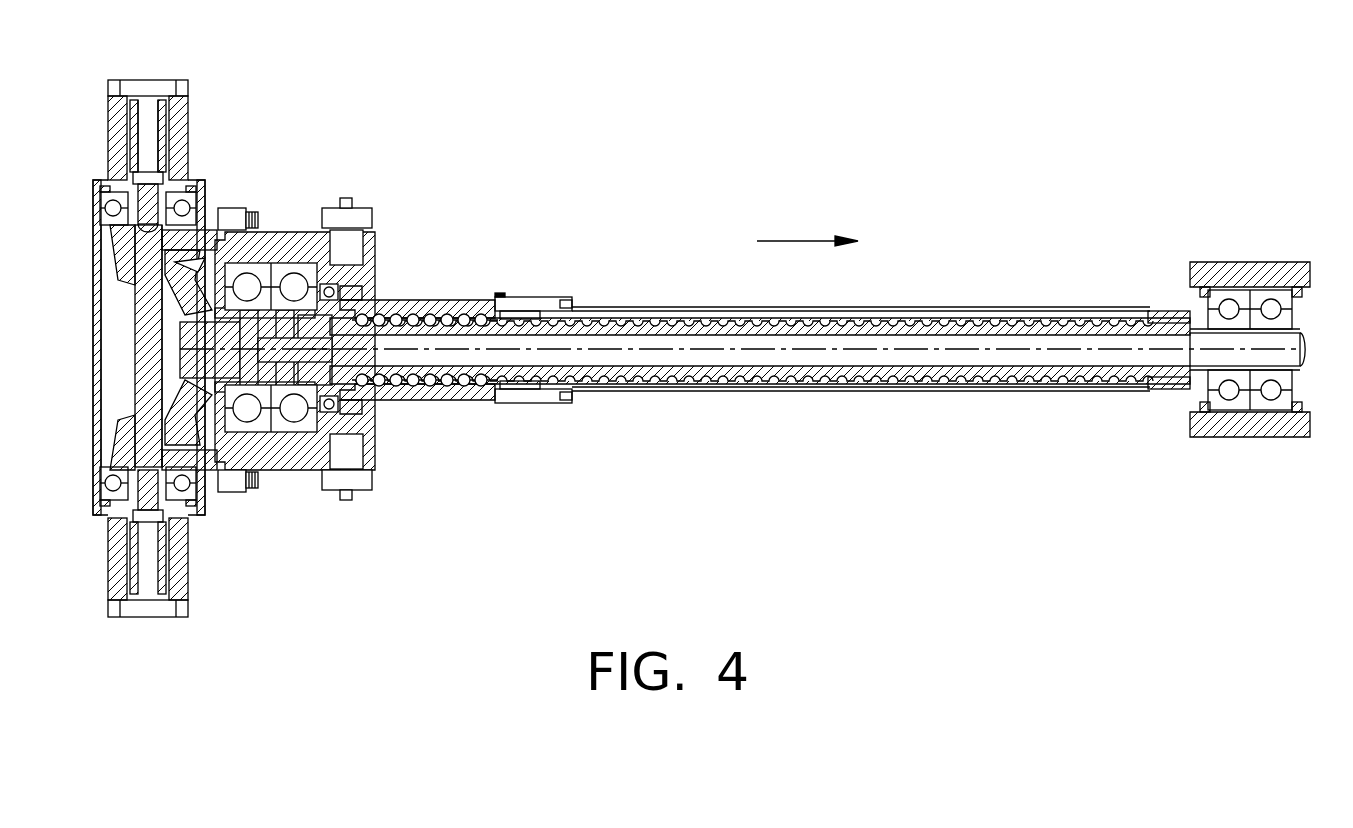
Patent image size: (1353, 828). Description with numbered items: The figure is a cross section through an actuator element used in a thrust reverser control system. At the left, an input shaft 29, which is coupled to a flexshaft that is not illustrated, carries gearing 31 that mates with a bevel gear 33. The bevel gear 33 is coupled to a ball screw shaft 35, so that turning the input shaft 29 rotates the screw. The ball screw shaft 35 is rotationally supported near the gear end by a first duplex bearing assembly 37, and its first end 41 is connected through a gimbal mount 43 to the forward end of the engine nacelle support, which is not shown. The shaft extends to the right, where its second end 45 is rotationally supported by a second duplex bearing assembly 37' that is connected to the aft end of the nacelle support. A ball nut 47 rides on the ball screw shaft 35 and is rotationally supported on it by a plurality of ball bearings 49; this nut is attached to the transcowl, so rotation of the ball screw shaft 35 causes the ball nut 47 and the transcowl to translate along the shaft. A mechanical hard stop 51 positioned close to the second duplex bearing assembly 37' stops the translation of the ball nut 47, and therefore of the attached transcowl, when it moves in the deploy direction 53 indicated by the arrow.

The input shaft 29 is at (180, 548).
The gearing 31 is at (170, 422).
The bevel gear 33 is at (190, 270).
The ball screw shaft 35 is at (785, 386).
The first duplex bearing assembly 37 is at (278, 446).
The second duplex bearing assembly 37' is at (1250, 369).
The first end 41 is at (268, 333).
The gimbal mount 43 is at (355, 206).
The second end 45 is at (1300, 355).
The ball nut 47 is at (460, 300).
The ball bearings 49 is at (455, 382).
The mechanical hard stop 51 is at (1166, 390).
The deploy direction 53 is at (790, 240).